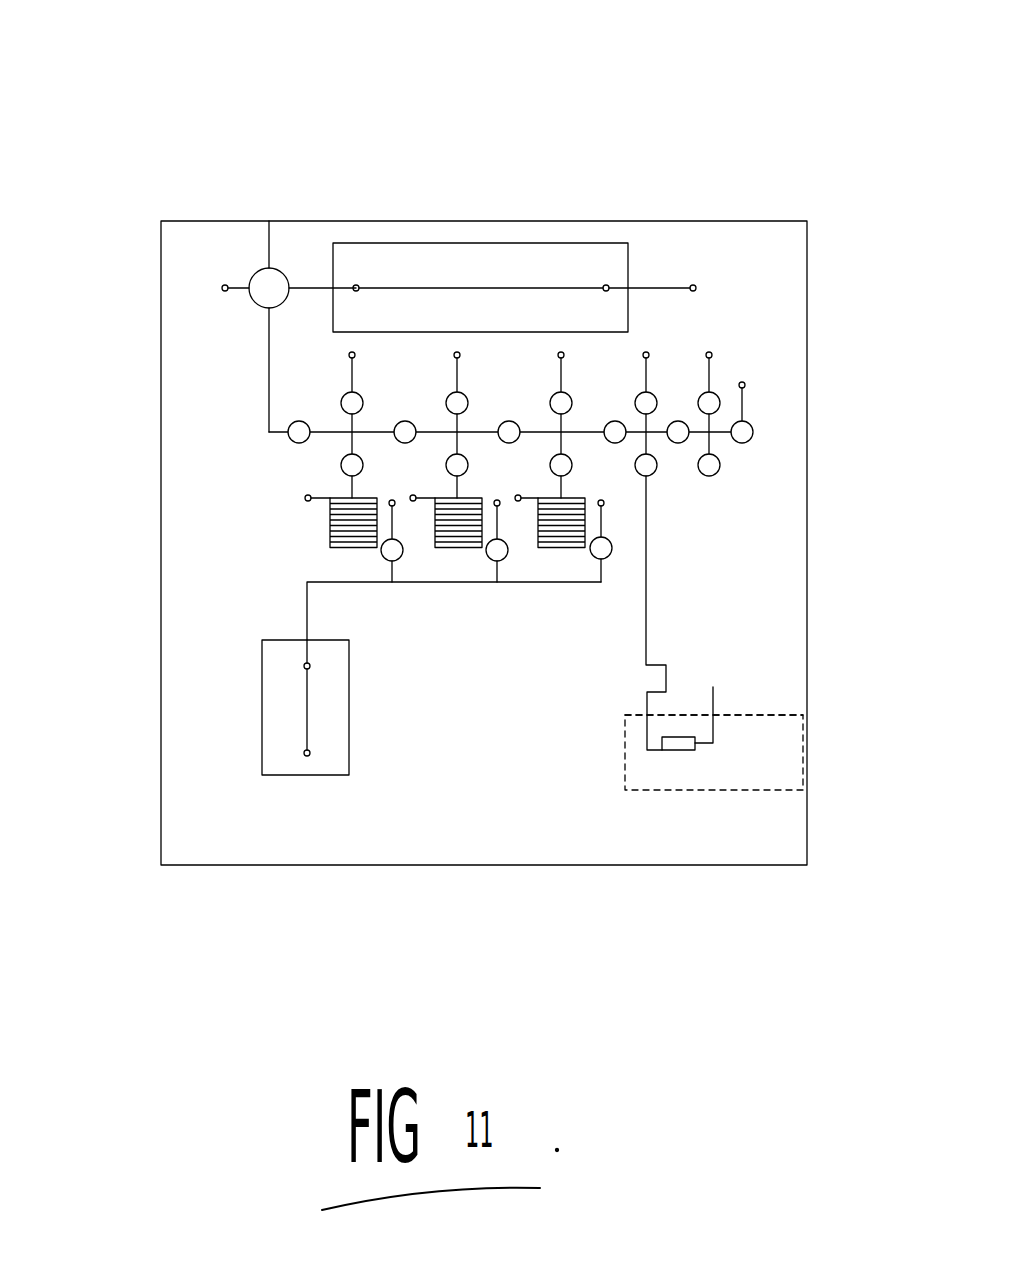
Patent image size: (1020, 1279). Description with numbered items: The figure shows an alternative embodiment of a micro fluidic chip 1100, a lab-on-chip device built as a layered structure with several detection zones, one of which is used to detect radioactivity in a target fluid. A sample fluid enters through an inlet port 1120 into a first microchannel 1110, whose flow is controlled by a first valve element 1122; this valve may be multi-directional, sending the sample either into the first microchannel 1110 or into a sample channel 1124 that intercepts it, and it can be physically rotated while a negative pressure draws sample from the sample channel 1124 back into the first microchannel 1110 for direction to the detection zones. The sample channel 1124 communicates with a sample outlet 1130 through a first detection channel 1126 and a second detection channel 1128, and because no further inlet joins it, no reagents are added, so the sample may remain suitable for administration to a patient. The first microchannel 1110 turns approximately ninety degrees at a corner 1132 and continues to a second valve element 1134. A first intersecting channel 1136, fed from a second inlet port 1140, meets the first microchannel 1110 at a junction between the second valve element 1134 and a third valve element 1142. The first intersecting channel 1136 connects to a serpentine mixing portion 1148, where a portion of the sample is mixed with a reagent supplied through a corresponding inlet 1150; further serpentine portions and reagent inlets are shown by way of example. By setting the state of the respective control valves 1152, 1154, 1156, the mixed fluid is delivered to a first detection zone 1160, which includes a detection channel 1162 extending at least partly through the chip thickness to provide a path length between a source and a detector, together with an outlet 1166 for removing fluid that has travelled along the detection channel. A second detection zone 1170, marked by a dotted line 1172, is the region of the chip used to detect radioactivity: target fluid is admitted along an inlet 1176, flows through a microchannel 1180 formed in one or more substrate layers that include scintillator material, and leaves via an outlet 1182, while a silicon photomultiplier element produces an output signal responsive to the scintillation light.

The micro fluidic chip 1100 is at (390, 112).
The first microchannel 1110 is at (266, 395).
The inlet port 1120 is at (222, 287).
The first valve element 1122 is at (258, 264).
The sample channel 1124 is at (307, 287).
The first detection channel 1126 is at (357, 287).
The second detection channel 1128 is at (605, 285).
The sample outlet 1130 is at (694, 285).
The corner 1132 is at (266, 432).
The second valve element 1134 is at (296, 442).
The first intersecting channel 1136 is at (347, 450).
The second inlet port 1140 is at (391, 500).
The third valve element 1142 is at (406, 431).
The serpentine mixing portion 1148 is at (329, 531).
The reagent inlet 1150 is at (305, 500).
The control valve 1152 is at (382, 557).
The control valve 1154 is at (501, 559).
The control valve 1156 is at (612, 558).
The first detection zone 1160 is at (275, 718).
The detection channel 1162 is at (304, 667).
The terminal 1166 is at (305, 756).
The second detection zone 1170 is at (768, 768).
The dotted line 1172 is at (763, 715).
The inlet 1176 is at (646, 533).
The microchannel 1180 is at (680, 752).
The outlet 1182 is at (713, 687).